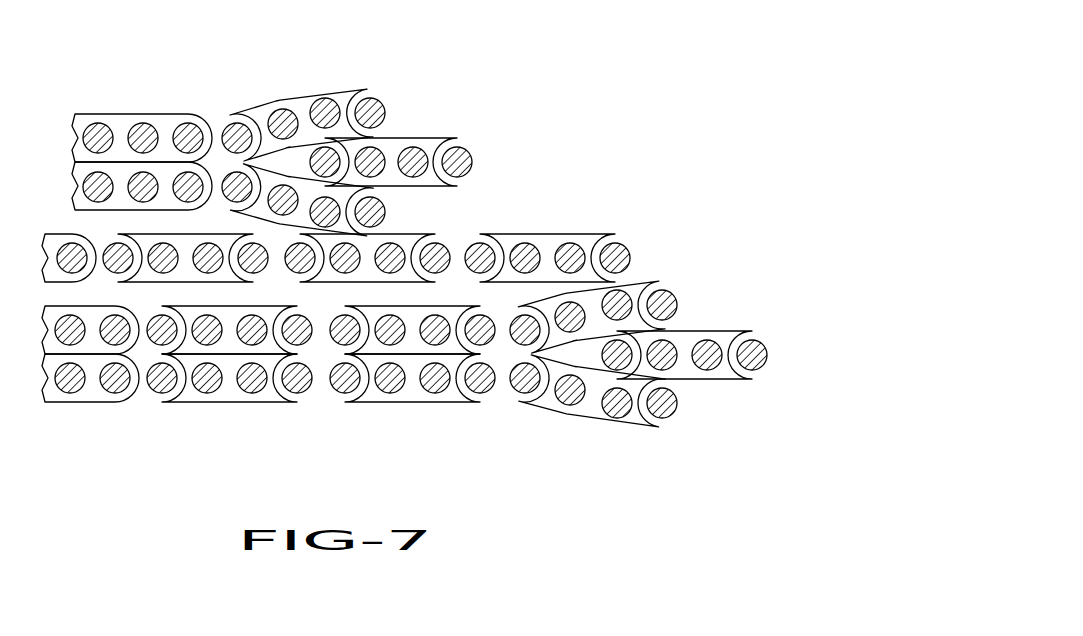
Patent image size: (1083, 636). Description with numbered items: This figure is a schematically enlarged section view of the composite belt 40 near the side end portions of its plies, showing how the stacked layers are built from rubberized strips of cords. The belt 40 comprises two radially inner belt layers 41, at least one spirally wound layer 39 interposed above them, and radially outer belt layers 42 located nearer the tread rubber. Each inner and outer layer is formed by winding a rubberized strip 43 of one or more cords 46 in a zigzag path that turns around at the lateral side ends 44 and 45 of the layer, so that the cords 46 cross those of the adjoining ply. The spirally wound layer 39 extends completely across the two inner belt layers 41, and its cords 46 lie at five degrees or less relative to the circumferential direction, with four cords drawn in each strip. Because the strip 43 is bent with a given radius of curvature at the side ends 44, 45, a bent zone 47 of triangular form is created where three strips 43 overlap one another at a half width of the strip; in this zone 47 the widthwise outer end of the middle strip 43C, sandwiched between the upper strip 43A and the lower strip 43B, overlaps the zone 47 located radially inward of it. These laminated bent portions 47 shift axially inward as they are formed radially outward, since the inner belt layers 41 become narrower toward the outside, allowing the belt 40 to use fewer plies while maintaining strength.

The spirally wound layer 39 is at (650, 237).
The belt 40 is at (678, 126).
The radially inner belt layer 41 is at (472, 377).
The radially outer belt layer 42 is at (323, 126).
The rubberized strip 43 is at (237, 118).
The upper strip 43A is at (684, 311).
The lower strip 43B is at (769, 371).
The middle strip 43C is at (685, 406).
The side end of the layer 44 is at (545, 395).
The side end of the layer 45 is at (773, 338).
The cord 46 is at (143, 130).
The bent zone 47 is at (305, 79).